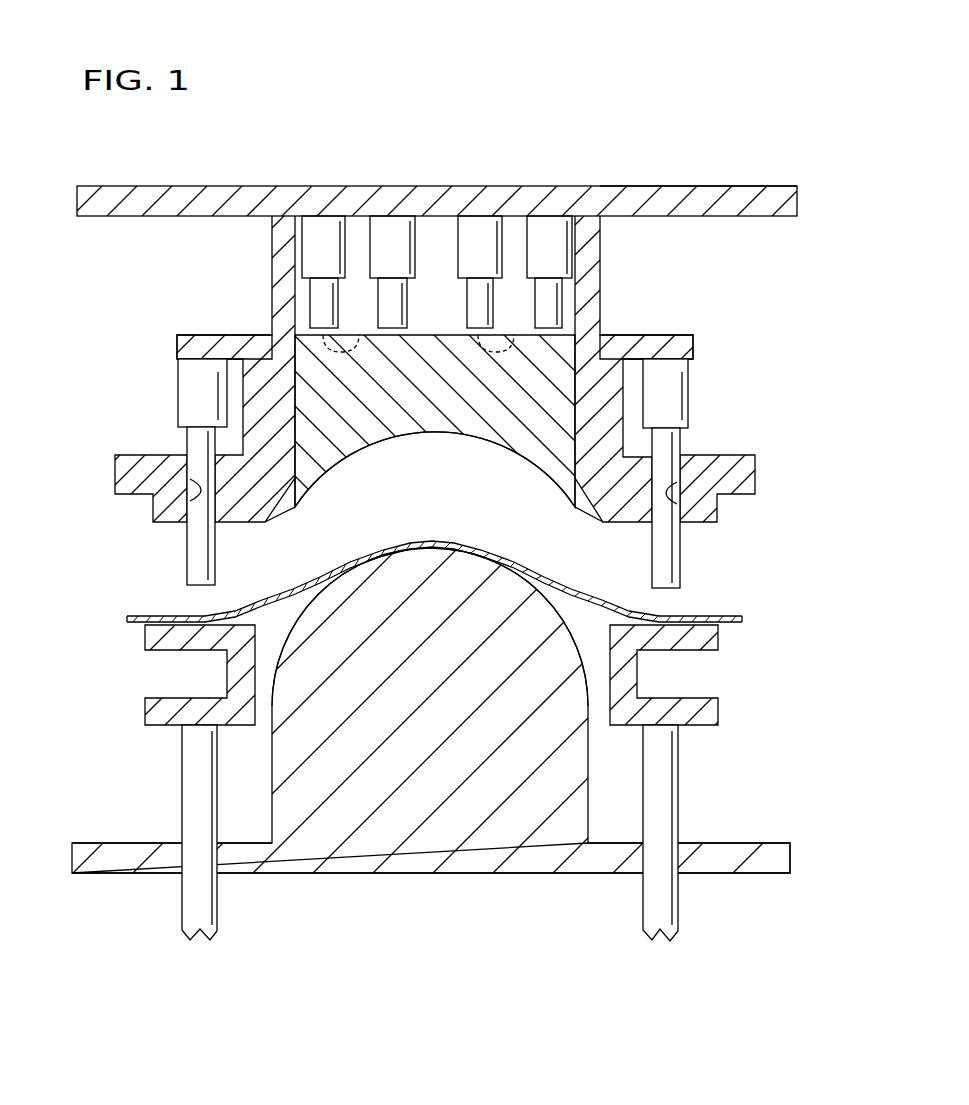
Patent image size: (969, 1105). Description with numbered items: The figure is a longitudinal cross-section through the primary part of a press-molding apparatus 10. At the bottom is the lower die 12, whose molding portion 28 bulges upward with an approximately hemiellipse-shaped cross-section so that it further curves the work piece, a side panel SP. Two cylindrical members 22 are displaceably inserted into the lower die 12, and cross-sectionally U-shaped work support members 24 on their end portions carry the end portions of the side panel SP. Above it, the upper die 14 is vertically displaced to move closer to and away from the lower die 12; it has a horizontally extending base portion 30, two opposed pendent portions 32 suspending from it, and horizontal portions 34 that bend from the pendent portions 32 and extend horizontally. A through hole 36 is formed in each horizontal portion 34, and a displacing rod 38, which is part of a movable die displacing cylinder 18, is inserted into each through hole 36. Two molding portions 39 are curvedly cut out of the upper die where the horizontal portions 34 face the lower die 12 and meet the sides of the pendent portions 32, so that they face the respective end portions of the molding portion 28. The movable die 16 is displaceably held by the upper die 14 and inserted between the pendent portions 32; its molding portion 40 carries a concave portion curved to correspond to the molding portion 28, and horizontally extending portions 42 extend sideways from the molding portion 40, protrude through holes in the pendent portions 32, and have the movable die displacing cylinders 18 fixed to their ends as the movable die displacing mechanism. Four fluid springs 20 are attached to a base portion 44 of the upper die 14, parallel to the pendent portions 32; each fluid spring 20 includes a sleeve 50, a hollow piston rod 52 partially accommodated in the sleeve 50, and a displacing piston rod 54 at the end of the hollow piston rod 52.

The molding apparatus 10 is at (128, 141).
The lower die 12 is at (467, 858).
The upper die 14 is at (223, 186).
The movable die 16 is at (552, 362).
The movable die displacing cylinder 18 is at (178, 380).
The fluid spring 20 is at (390, 227).
The cylindrical member 22 is at (200, 777).
The work support member 24 is at (170, 702).
The molding portion 28 is at (418, 573).
The base portion 30 is at (92, 843).
The pendent portion 32 is at (283, 252).
The horizontal portion 34 is at (122, 478).
The through hole 36 is at (185, 487).
The displacing rod 38 is at (185, 447).
The molding portion 39 is at (294, 505).
The molding portion 40 is at (449, 418).
The horizontally extending portion 42 is at (195, 338).
The base portion 44 is at (652, 188).
The sleeve 50 is at (315, 228).
The hollow piston rod 52 is at (323, 292).
The displacing piston rod 54 is at (358, 333).
The side panel SP is at (725, 613).